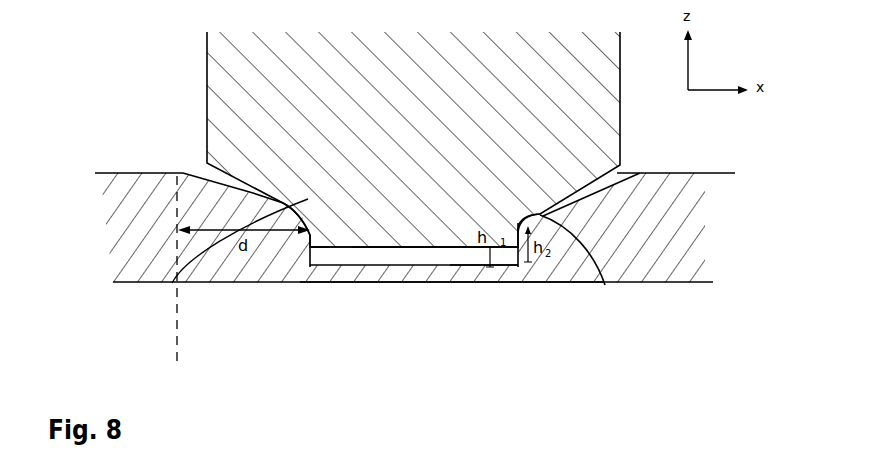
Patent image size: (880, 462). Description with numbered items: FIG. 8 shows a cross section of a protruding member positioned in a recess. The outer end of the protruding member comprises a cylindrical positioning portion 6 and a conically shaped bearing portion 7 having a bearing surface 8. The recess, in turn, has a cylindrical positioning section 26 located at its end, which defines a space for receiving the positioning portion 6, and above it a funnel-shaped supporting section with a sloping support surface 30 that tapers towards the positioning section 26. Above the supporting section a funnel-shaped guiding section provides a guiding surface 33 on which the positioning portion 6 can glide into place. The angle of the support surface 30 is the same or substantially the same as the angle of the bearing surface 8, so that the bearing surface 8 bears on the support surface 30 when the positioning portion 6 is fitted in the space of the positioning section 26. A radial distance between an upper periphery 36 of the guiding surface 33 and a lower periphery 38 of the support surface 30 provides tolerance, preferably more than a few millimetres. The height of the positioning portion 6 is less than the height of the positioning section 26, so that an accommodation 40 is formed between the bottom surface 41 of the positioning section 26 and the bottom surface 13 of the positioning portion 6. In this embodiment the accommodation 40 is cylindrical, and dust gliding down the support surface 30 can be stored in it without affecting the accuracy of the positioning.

The bearing surface 8 is at (536, 206).
The bearing portion 7 is at (172, 283).
The upper periphery of the guiding surface 36 is at (181, 172).
The lower periphery of the support surface 38 is at (287, 282).
The positioning section 26 is at (367, 282).
The accommodation 40 is at (414, 256).
The bottom surface of the positioning section 41 is at (433, 264).
The positioning portion 6 is at (465, 240).
The bottom surface of the positioning portion 13 is at (490, 268).
The support surface 30 is at (605, 285).
The guiding surface 33 is at (537, 223).